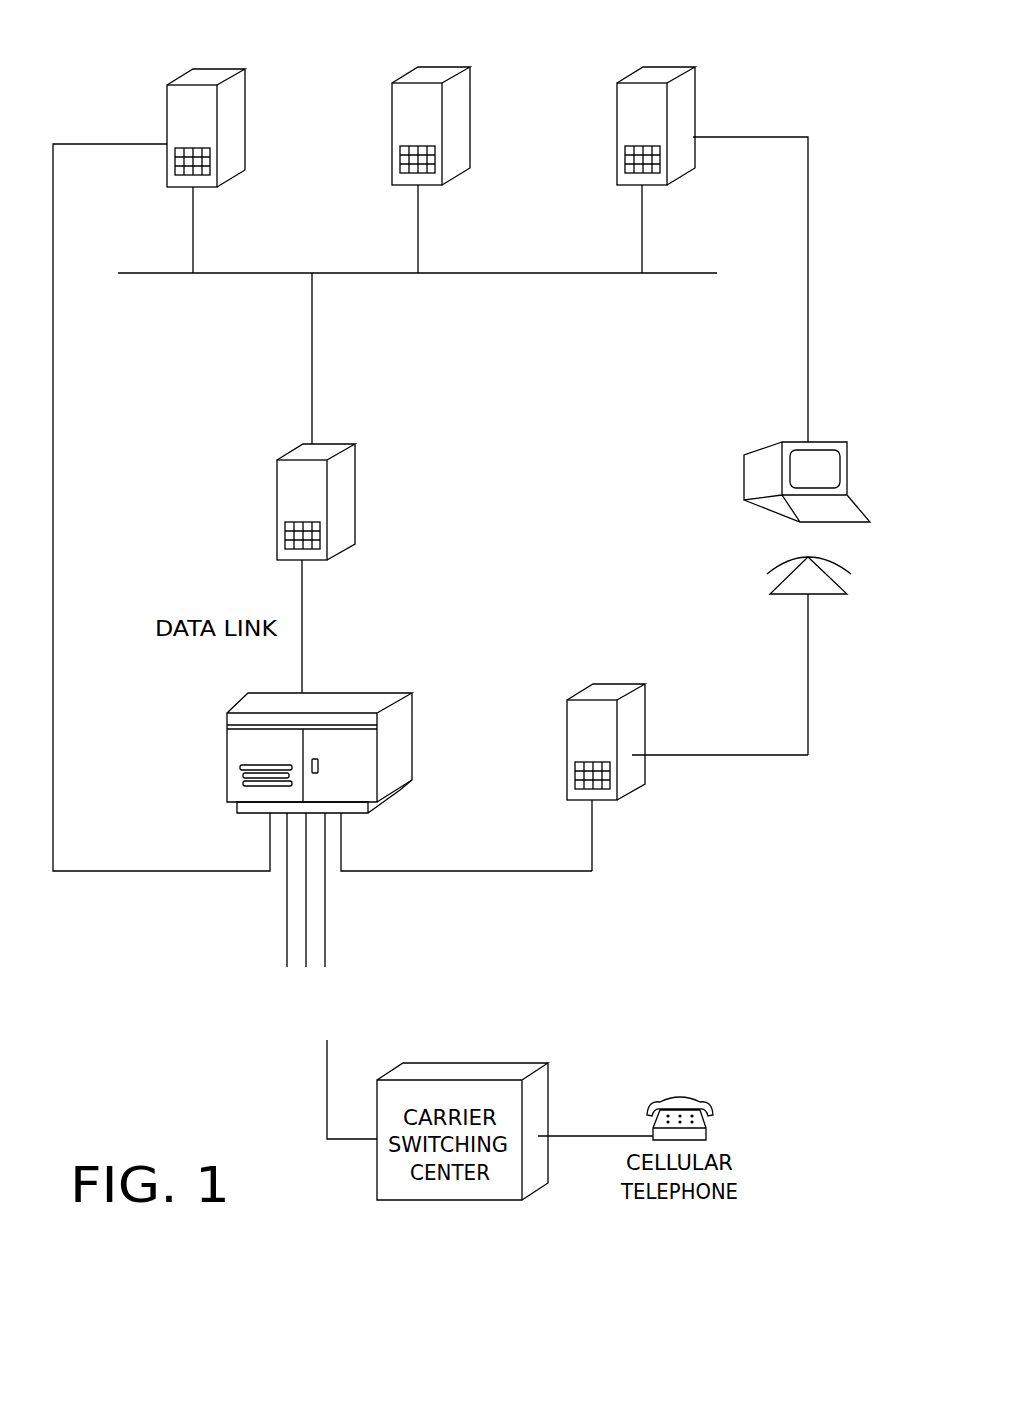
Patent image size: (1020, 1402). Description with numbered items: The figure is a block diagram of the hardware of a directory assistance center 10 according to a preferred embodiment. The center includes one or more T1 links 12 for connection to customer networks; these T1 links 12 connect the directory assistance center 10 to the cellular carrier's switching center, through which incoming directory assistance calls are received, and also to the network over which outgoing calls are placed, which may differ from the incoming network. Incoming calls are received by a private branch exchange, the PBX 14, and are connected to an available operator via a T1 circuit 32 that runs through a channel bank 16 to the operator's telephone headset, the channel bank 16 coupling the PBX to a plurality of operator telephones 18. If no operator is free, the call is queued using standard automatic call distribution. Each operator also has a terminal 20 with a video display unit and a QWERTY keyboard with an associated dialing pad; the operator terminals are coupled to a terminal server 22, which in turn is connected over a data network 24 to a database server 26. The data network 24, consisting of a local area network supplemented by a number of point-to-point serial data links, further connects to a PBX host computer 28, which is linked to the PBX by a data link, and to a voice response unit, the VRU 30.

The directory assistance center 10 is at (760, 80).
The T1 links 12 is at (352, 903).
The private branch exchange (PBX) 14 is at (227, 745).
The channel bank 16 is at (567, 737).
The operator telephones 18 is at (820, 595).
The terminal 20 is at (823, 442).
The terminal server 22 is at (616, 106).
The data network 24 is at (623, 274).
The database server 26 is at (391, 106).
The PBX host computer 28 is at (277, 483).
The voice response unit (VRU) 30 is at (166, 106).
The T1 circuit 32 is at (550, 871).